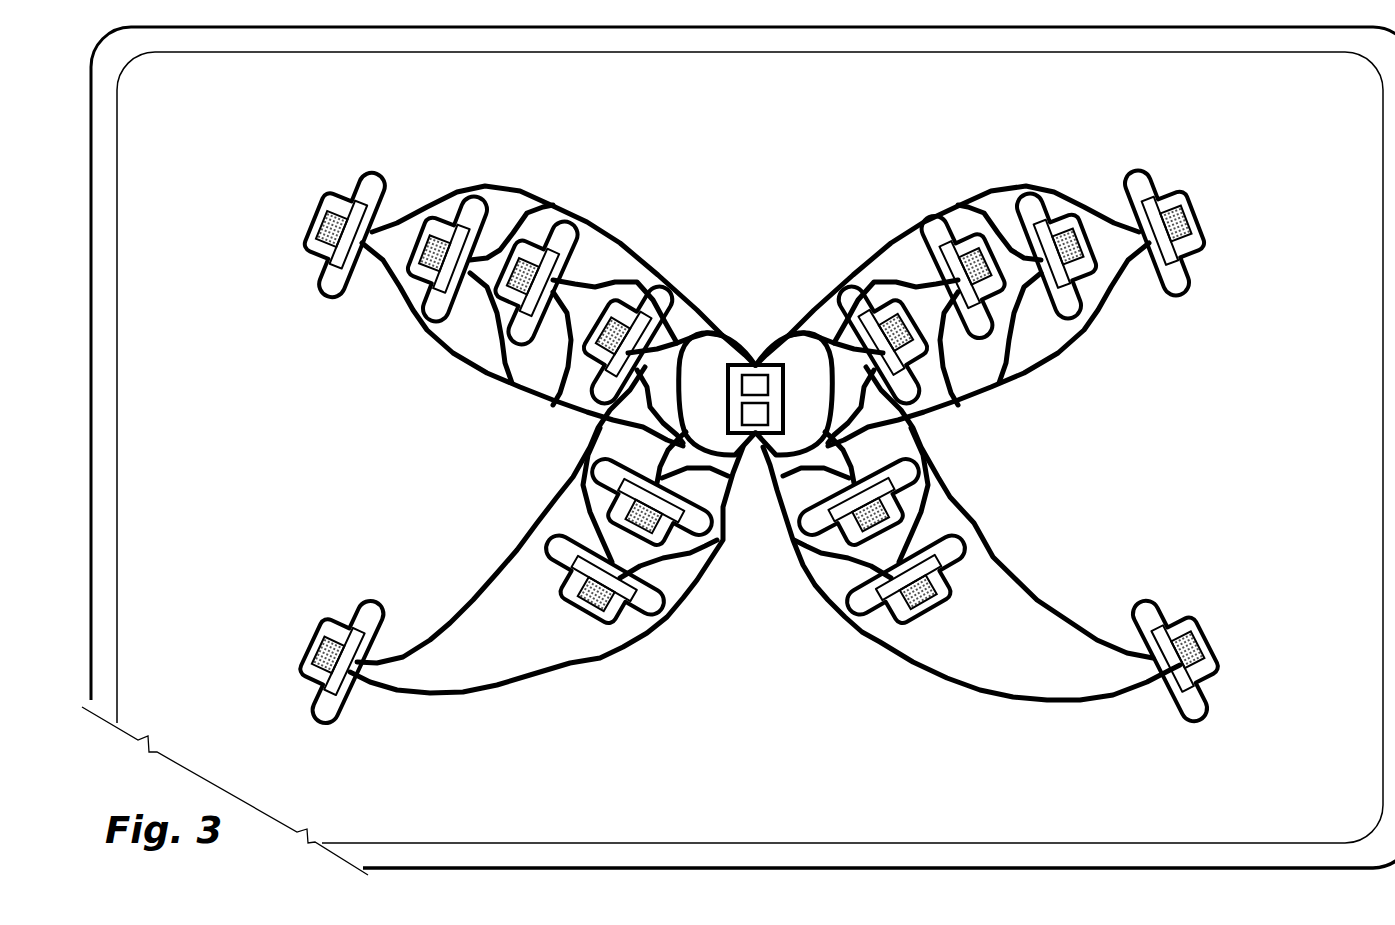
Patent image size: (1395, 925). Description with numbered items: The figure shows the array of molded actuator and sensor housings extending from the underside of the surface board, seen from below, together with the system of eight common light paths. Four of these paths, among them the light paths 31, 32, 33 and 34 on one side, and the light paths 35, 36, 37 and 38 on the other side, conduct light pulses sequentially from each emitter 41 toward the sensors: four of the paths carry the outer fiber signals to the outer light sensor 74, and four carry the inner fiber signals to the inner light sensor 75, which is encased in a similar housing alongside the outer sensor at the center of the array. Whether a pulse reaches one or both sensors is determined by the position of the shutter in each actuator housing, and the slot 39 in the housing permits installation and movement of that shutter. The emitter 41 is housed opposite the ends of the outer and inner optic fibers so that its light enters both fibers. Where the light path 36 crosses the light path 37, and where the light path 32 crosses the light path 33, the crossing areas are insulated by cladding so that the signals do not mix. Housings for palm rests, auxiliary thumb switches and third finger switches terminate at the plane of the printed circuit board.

The common light path 31 is at (975, 197).
The light path 32 is at (1053, 357).
The light path 33 is at (1023, 573).
The common light path 34 is at (957, 677).
The common light path 35 is at (542, 677).
The light path 36 is at (485, 585).
The light path 37 is at (430, 343).
The common light path 38 is at (522, 190).
The slot 39 is at (352, 200).
The emitter 41 is at (328, 248).
The outer light sensor 74 is at (760, 383).
The inner light sensor 75 is at (760, 413).